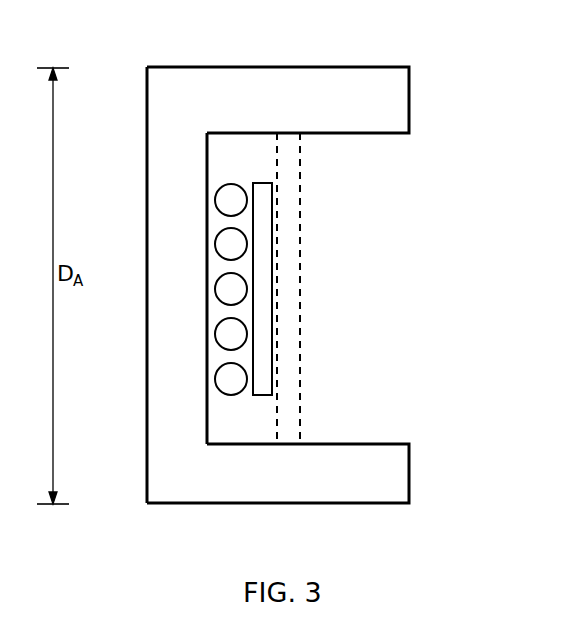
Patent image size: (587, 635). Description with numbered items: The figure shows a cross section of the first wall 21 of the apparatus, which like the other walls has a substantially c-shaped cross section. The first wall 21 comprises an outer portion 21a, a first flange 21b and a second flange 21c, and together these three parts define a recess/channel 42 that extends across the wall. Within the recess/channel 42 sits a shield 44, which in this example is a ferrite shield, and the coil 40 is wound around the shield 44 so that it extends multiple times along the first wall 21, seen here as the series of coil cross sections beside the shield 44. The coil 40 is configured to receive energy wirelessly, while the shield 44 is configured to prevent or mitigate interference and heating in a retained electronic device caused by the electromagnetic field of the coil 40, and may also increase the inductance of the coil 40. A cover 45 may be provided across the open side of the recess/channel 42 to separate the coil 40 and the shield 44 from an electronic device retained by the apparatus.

The first wall 21 is at (295, 286).
The outer portion 21a is at (165, 384).
The first flange 21b is at (289, 91).
The second flange 21c is at (322, 485).
The coil 40 is at (238, 264).
The recess/channel 42 is at (385, 173).
The shield 44 is at (261, 305).
The cover 45 is at (287, 322).